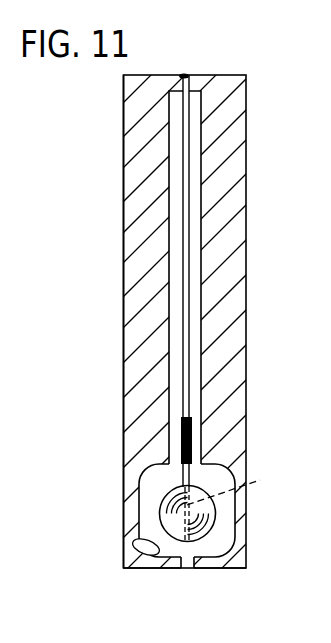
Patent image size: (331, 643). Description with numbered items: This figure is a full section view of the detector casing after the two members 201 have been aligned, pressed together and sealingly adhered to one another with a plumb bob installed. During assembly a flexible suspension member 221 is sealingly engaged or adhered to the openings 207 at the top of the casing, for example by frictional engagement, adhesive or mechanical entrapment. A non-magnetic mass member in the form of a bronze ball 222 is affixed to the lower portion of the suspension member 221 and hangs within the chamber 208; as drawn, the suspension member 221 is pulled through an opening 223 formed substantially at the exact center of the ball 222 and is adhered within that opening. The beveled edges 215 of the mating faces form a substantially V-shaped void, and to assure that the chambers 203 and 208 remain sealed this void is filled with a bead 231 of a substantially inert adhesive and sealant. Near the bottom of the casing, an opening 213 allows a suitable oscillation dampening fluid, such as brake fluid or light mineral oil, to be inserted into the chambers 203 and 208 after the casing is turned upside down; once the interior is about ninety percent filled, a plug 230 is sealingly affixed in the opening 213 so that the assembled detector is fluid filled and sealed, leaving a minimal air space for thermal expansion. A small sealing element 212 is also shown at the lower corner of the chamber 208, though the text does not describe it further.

The members 201 is at (134, 151).
The chamber 203 is at (170, 212).
The openings 207 is at (190, 86).
The chamber 208 is at (153, 494).
The seal ring 212 is at (137, 539).
The opening 213 is at (182, 570).
The beveled edges 215 is at (183, 77).
The flexible suspension member 221 is at (189, 170).
The bronze ball 222 is at (208, 522).
The opening 223 is at (242, 488).
The plug 230 is at (192, 570).
The bead 231 is at (185, 77).